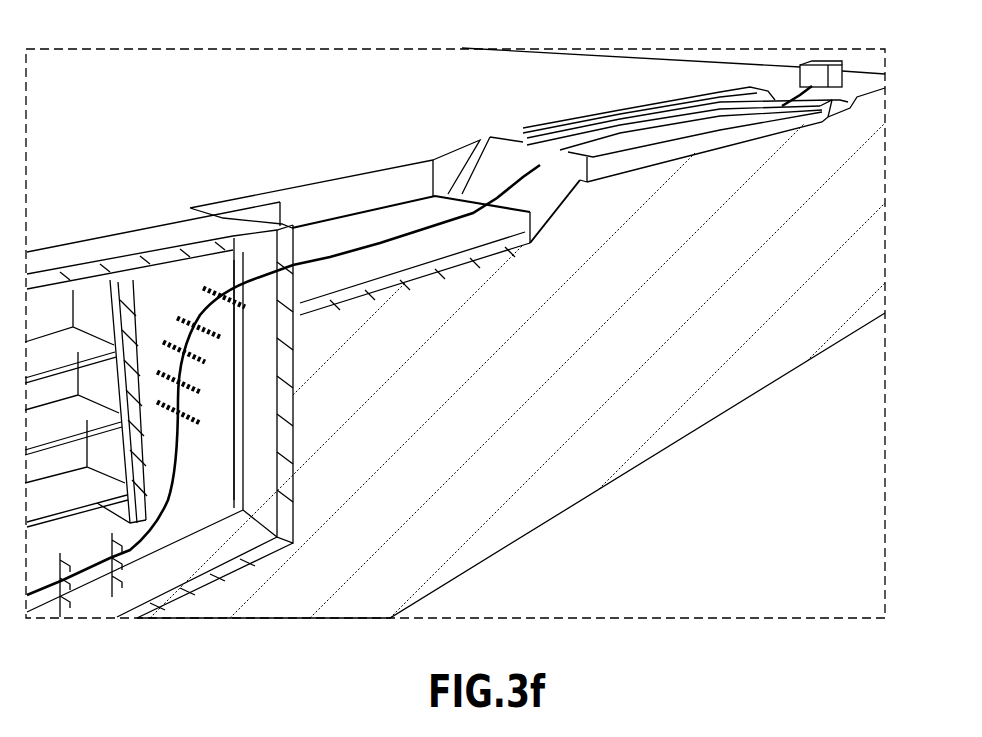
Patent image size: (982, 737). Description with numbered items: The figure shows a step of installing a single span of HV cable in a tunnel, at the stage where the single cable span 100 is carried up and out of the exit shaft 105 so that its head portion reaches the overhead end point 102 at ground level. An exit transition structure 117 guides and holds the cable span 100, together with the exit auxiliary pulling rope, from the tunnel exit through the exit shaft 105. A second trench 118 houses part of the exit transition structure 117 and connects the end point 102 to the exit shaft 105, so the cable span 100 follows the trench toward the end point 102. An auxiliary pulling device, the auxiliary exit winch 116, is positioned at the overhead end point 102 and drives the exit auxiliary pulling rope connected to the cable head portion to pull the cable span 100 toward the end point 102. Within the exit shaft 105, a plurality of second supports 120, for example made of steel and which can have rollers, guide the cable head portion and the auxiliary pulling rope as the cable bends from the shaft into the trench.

The single cable span 100 is at (163, 513).
The end point 102 is at (850, 84).
The exit shaft 105 is at (194, 290).
The auxiliary exit winch 116 is at (815, 77).
The exit transition structure 117 is at (150, 314).
The second trench 118 is at (587, 147).
The second supports 120 is at (182, 318).